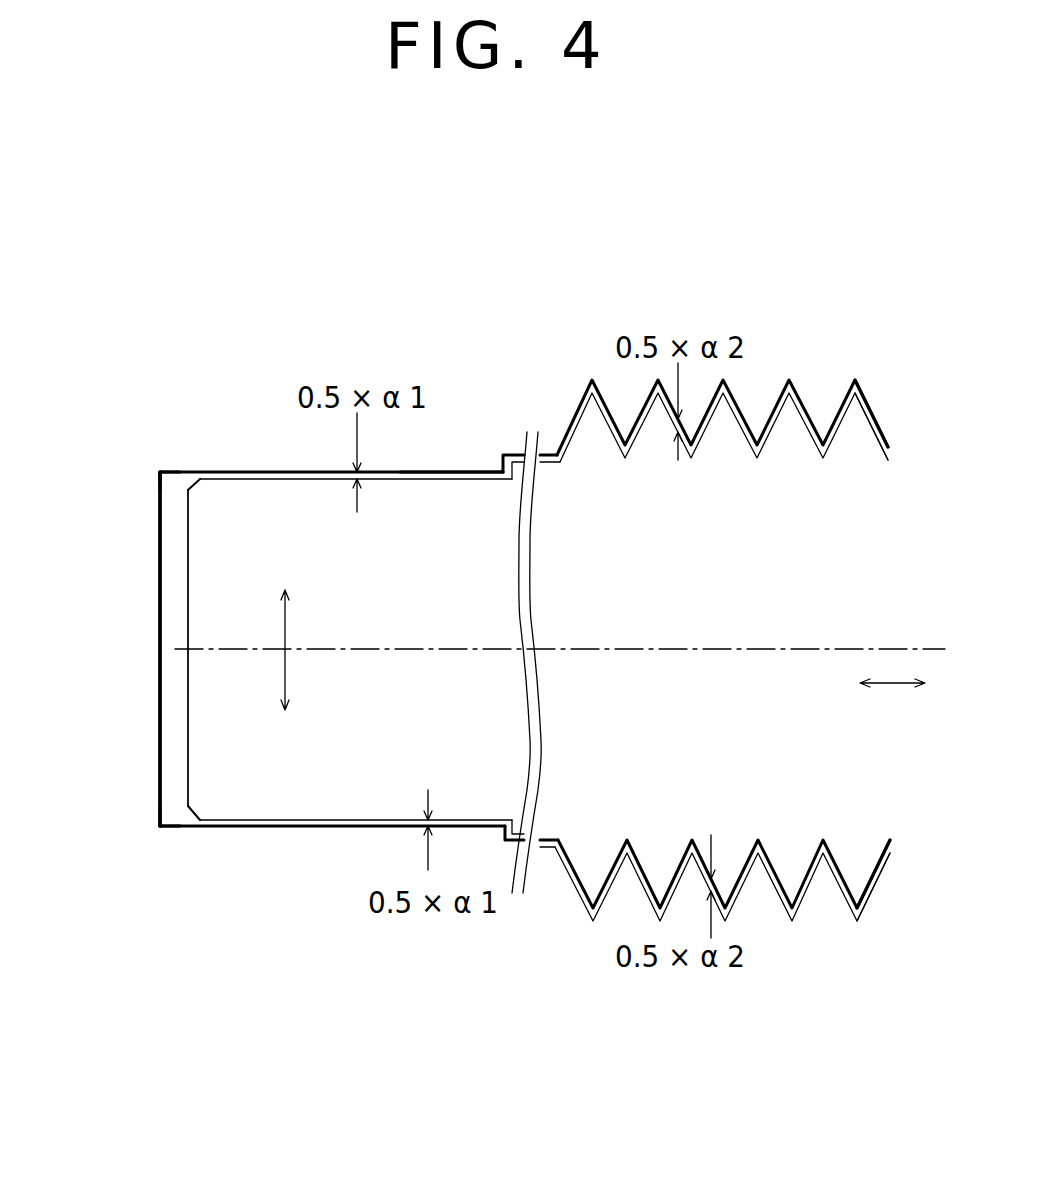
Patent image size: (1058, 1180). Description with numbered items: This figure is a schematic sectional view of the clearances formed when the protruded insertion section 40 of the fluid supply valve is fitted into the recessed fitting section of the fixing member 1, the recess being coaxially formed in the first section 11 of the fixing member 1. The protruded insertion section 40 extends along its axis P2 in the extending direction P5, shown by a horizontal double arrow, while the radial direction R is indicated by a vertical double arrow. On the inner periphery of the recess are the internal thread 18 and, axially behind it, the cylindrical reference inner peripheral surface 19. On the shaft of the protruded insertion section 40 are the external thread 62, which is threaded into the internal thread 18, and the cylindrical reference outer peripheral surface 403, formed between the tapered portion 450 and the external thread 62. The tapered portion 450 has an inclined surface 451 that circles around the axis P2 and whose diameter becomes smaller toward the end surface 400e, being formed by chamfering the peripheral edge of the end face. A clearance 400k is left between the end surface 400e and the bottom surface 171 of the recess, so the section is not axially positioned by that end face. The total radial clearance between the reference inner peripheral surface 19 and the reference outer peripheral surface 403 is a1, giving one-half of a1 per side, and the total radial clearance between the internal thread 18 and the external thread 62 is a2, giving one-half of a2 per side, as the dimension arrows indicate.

The fixing member 1 is at (430, 425).
The first section 11 is at (466, 436).
The internal thread 18 is at (834, 432).
The reference inner peripheral surface 19 is at (305, 479).
The protruded insertion section 40 is at (328, 690).
The external thread 62 is at (876, 424).
The bottom surface 171 is at (160, 608).
The reference outer peripheral surface 403 is at (262, 472).
The tapered portion 450 is at (197, 483).
The inclined surface 451 is at (188, 474).
The clearance 400k is at (172, 690).
The end surface 400e is at (185, 733).
The radial direction R is at (285, 630).
The axis of the protruded insertion section P2 is at (803, 640).
The extending direction P5 is at (893, 692).